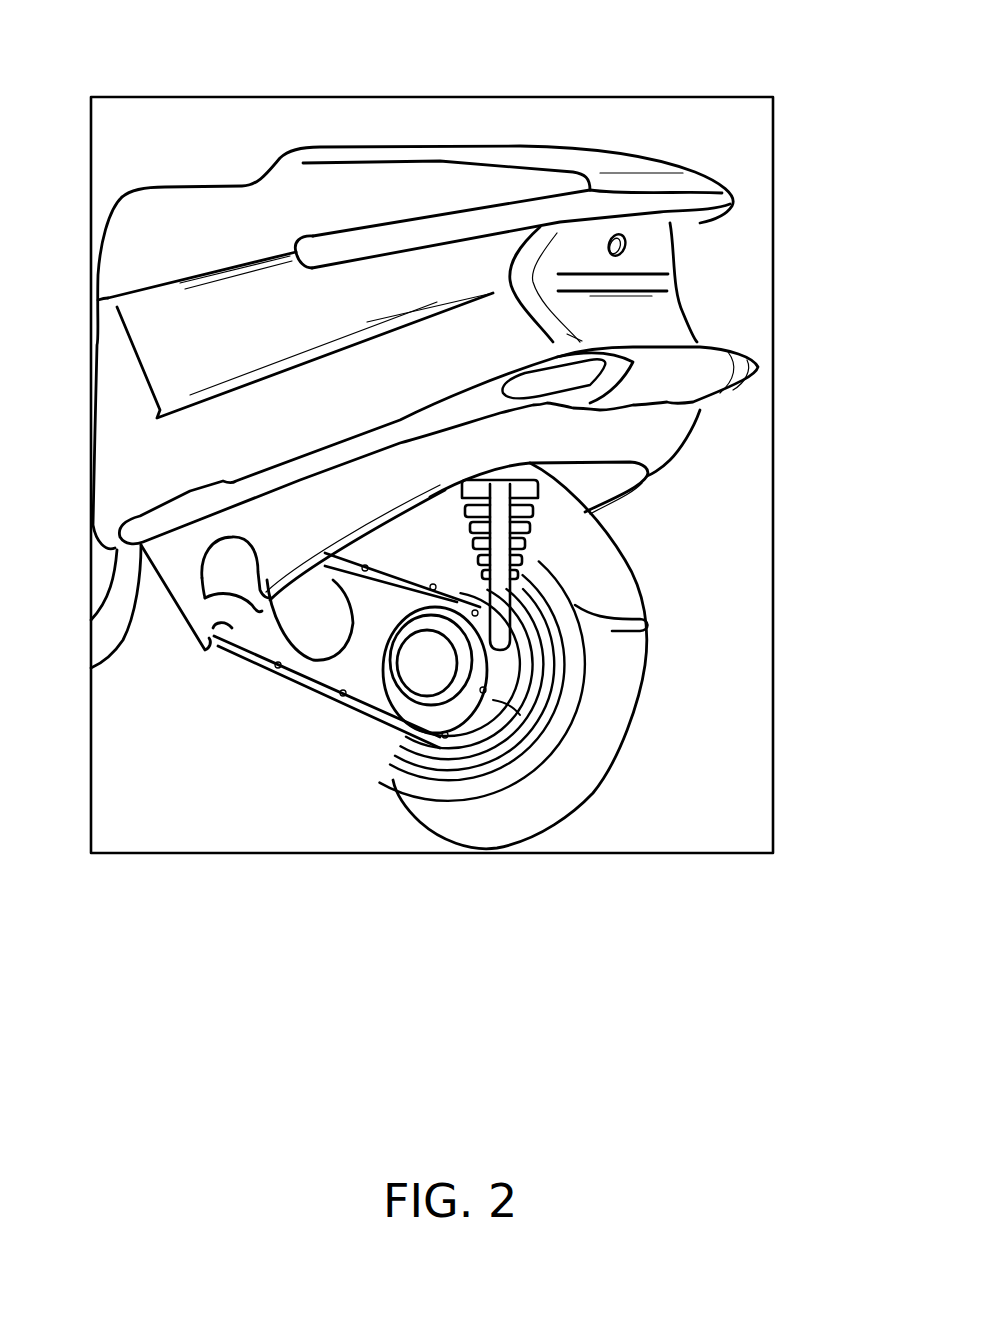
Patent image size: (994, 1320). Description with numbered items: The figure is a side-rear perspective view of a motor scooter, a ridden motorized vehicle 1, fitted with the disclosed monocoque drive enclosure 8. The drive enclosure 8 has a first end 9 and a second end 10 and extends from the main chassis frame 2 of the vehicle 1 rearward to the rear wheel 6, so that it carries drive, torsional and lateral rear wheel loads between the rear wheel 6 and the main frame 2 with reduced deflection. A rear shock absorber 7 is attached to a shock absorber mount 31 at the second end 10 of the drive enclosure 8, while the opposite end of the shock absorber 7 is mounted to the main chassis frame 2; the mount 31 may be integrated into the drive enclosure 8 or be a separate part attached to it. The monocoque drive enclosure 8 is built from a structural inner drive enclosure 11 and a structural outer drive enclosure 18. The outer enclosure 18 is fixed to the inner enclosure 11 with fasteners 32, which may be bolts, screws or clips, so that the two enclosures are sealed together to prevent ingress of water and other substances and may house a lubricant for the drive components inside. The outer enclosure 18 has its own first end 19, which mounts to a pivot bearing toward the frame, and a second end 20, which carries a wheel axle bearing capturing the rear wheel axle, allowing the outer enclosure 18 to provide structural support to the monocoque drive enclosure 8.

The ridden motorized vehicle 1 is at (664, 76).
The main chassis frame 2 is at (93, 650).
The rear wheel 6 is at (643, 690).
The rear shock absorber 7 is at (530, 537).
The monocoque drive enclosure 8 is at (380, 695).
The first end 9 is at (240, 625).
The second end 10 is at (455, 736).
The structural inner drive enclosure 11 is at (495, 707).
The structural outer drive enclosure 18 is at (480, 737).
The first end 19 is at (215, 633).
The second end 20 is at (478, 736).
The shock absorber mount 31 is at (647, 627).
The fasteners 32 is at (430, 587).